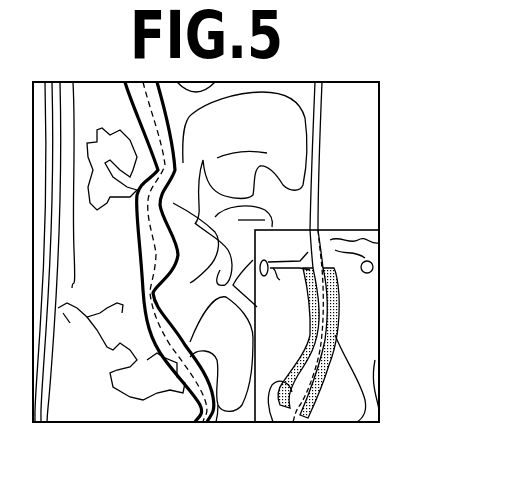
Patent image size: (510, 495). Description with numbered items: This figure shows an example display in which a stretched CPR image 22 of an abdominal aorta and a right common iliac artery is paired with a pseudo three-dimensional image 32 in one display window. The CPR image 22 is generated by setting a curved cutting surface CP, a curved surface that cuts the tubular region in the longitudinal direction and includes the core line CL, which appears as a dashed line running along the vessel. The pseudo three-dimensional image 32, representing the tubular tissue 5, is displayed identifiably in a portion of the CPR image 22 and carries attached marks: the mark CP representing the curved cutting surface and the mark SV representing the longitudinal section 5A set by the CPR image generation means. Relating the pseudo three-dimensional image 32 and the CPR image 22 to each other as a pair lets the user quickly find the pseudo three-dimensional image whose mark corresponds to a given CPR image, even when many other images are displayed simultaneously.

The stretched CPR image 22 is at (379, 113).
The pseudo three-dimensional image 32 is at (379, 377).
The tubular tissue 5 is at (145, 345).
The longitudinal section 5A is at (208, 400).
The core line CL is at (178, 358).
The curved cutting surface CP is at (335, 335).
The mark representing the longitudinal section SV is at (280, 397).